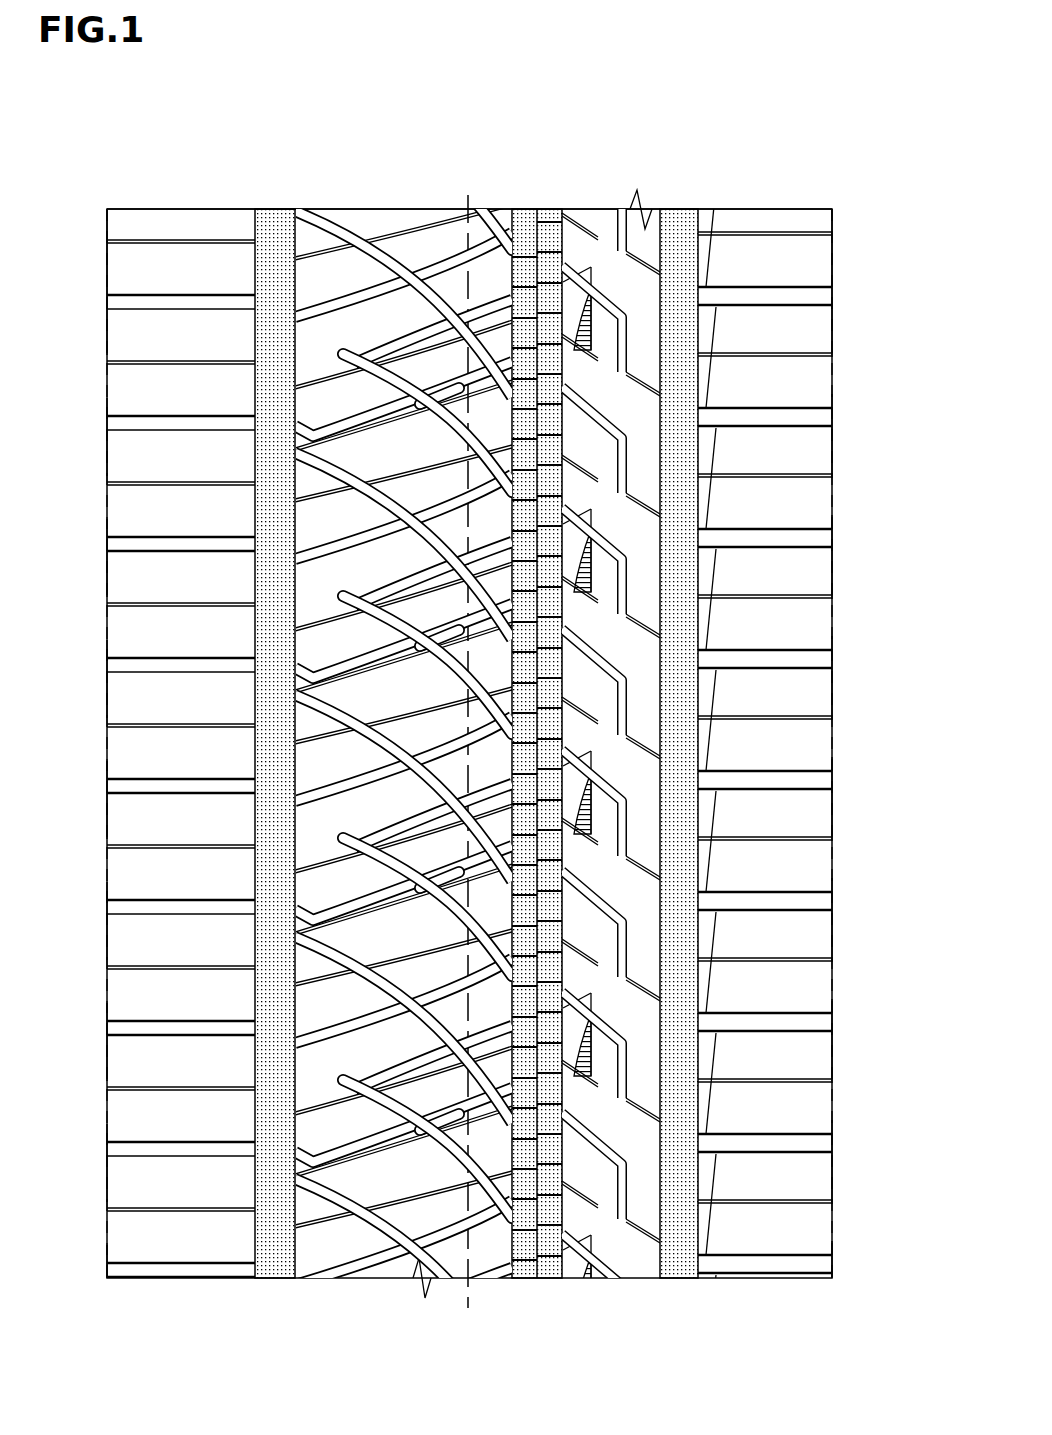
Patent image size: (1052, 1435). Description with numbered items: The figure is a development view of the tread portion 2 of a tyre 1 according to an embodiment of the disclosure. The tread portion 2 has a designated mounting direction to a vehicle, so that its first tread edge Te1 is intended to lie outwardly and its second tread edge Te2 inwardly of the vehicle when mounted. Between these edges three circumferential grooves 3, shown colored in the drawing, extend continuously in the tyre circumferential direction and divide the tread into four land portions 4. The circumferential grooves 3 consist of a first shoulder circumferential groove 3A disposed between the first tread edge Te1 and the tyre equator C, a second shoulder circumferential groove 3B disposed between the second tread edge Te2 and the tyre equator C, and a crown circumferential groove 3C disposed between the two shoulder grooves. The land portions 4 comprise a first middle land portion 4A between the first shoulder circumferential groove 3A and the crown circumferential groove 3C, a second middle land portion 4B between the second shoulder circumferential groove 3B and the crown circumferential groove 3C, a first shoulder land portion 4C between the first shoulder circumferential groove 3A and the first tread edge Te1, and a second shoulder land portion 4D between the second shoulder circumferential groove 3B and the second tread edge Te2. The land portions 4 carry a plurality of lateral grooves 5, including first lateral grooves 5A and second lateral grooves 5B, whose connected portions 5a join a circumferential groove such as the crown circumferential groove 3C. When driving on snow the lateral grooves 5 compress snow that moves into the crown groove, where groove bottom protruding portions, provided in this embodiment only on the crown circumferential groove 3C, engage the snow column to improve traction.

The tyre 1 is at (571, 195).
The tread portion 2 is at (315, 195).
The circumferential grooves 3 is at (376, 706).
The first shoulder circumferential groove 3A is at (275, 268).
The second shoulder circumferential groove 3B is at (680, 250).
The crown circumferential groove 3C is at (525, 245).
The land portions 4 is at (469, 717).
The first middle land portion 4A is at (270, 717).
The second middle land portion 4B is at (736, 737).
The first shoulder land portion 4C is at (185, 268).
The second shoulder land portion 4D is at (755, 262).
The lateral grooves 5 is at (292, 437).
The first lateral grooves 5A is at (508, 618).
The second lateral grooves 5B is at (602, 655).
The connected portions 5a is at (455, 633).
The tyre equator C is at (467, 728).
The first tread edge Te1 is at (107, 256).
The second tread edge Te2 is at (833, 256).